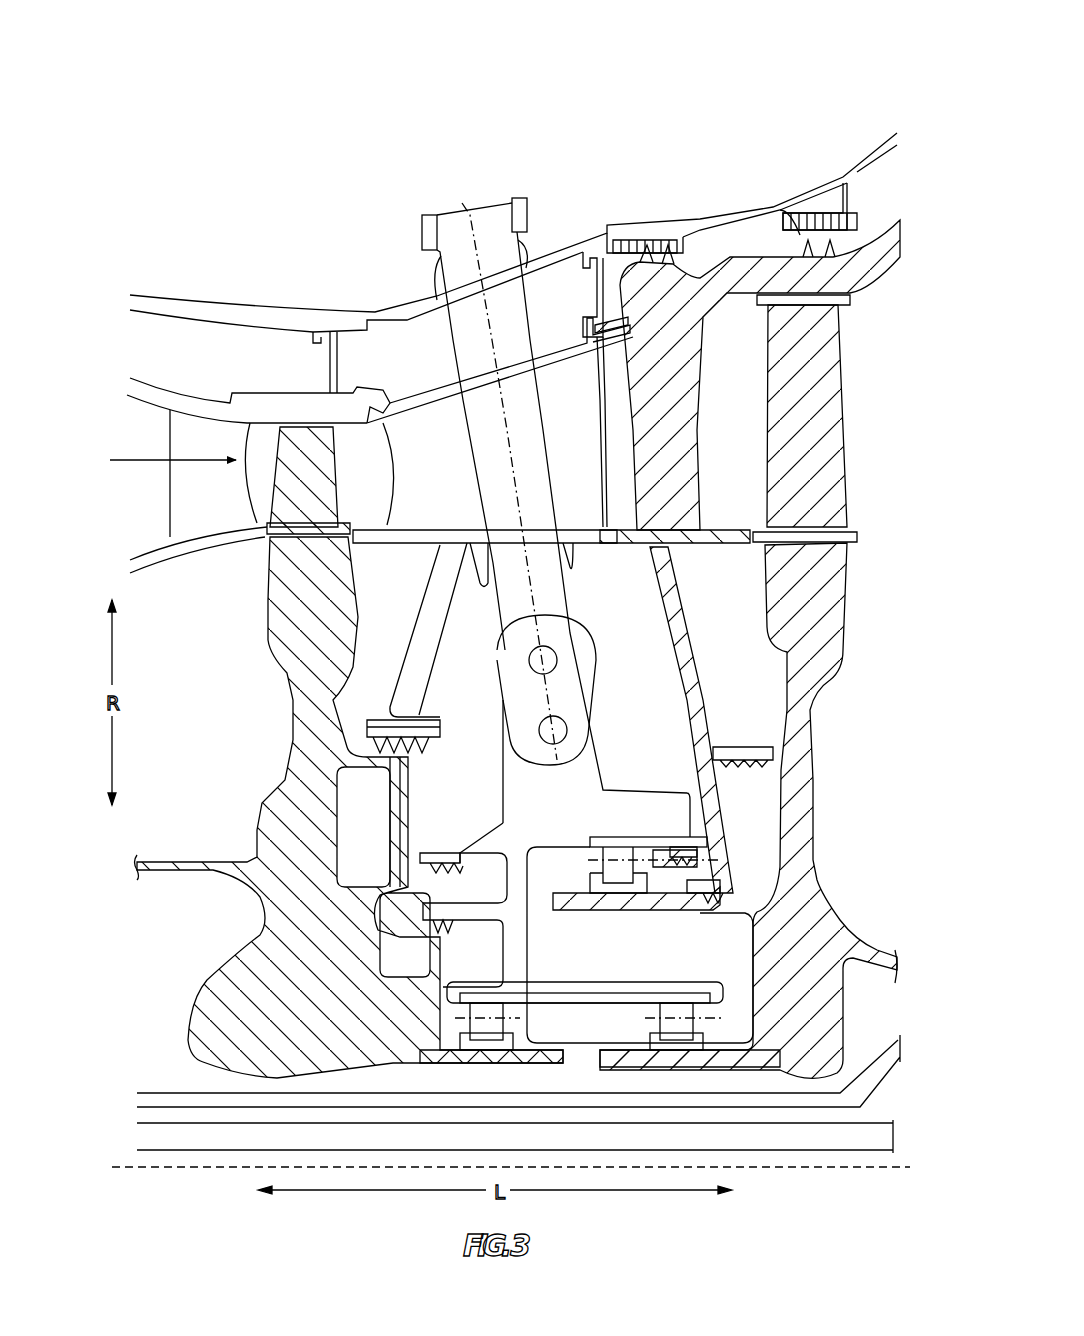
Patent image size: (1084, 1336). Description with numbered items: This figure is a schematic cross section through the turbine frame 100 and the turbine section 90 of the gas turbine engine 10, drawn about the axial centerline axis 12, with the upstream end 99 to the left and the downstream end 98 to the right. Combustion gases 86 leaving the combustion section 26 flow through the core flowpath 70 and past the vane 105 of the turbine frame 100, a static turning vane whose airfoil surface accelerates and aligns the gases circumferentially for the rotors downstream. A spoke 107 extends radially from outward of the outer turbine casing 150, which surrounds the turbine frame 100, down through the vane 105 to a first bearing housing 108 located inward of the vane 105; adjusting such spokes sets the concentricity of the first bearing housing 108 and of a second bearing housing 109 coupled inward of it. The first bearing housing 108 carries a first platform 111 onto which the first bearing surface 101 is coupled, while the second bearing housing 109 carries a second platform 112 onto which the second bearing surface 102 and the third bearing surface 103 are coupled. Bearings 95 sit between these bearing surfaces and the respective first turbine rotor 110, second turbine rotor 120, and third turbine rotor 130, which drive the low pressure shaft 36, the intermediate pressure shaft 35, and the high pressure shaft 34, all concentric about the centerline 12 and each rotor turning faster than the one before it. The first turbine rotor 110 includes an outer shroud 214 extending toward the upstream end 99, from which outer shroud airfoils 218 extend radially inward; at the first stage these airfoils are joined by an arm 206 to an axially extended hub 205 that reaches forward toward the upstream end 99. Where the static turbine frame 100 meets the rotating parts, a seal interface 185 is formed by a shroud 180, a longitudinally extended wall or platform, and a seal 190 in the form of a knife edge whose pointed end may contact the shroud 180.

The gas turbine engine 10 is at (720, 52).
The axial centerline axis 12 is at (227, 1168).
The combustion section 26 is at (112, 357).
The high pressure shaft 34 is at (155, 866).
The intermediate pressure shaft 35 is at (137, 1093).
The low pressure shaft 36 is at (137, 1136).
The core flowpath 70 is at (158, 503).
The combustion gases 86 is at (122, 460).
The turbine section 90 is at (680, 150).
The bearings 95 is at (603, 857).
The downstream end 98 is at (900, 390).
The upstream end 99 is at (93, 533).
The turbine frame 100 is at (448, 475).
The first bearing surface 101 is at (650, 866).
The second bearing surface 102 is at (649, 1008).
The third bearing surface 103 is at (550, 990).
The vane 105 is at (560, 385).
The spoke 107 is at (465, 225).
The first bearing housing 108 is at (583, 823).
The second bearing housing 109 is at (653, 985).
The first turbine rotor 110 is at (693, 545).
The first platform 111 is at (643, 843).
The second platform 112 is at (575, 993).
The second turbine rotor 120 is at (630, 1059).
The third turbine rotor 130 is at (548, 1060).
The outer turbine casing 150 is at (700, 220).
The shroud 180 is at (407, 733).
The seal interface 185 is at (753, 738).
The seal 190 is at (420, 758).
The axially extended hub 205 is at (647, 908).
The arm 206 is at (687, 668).
The outer shroud 214 is at (690, 287).
The outer shroud airfoils 218 is at (687, 432).